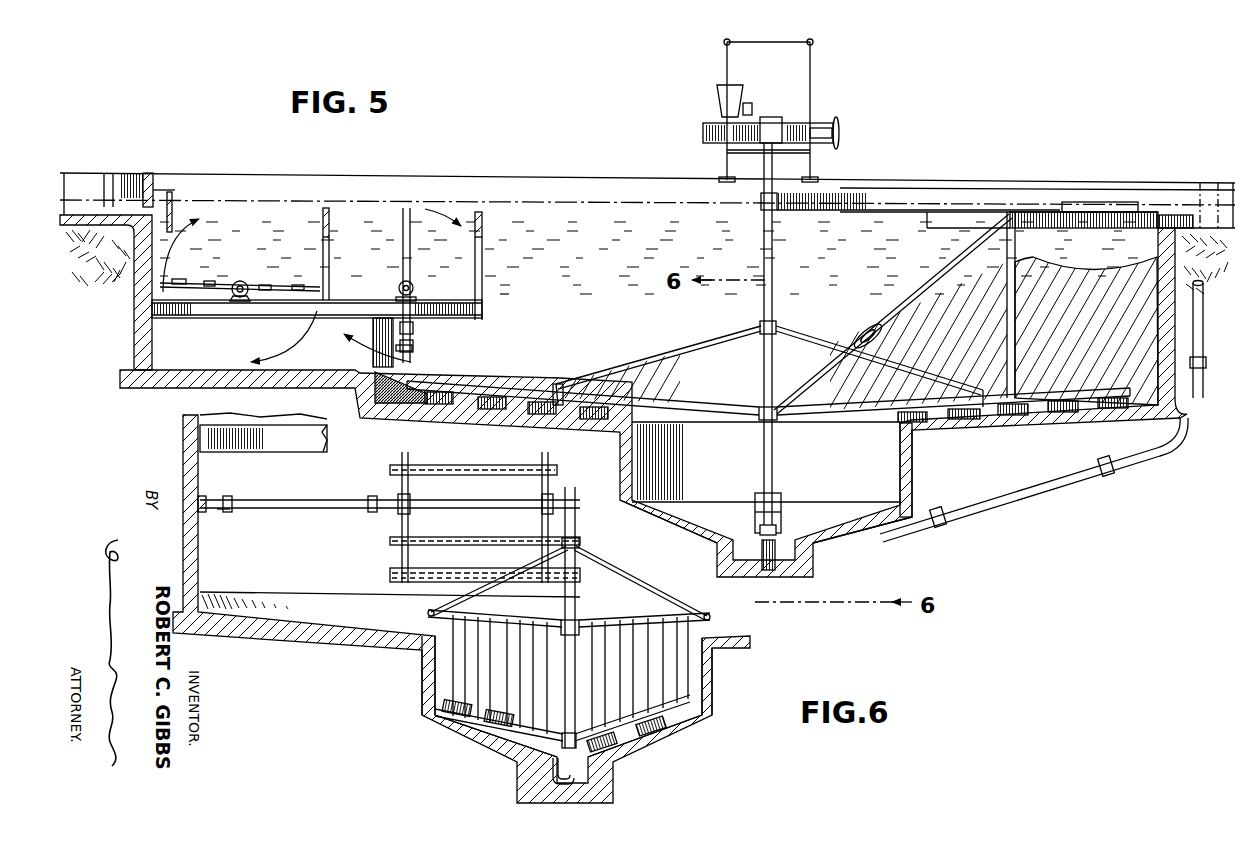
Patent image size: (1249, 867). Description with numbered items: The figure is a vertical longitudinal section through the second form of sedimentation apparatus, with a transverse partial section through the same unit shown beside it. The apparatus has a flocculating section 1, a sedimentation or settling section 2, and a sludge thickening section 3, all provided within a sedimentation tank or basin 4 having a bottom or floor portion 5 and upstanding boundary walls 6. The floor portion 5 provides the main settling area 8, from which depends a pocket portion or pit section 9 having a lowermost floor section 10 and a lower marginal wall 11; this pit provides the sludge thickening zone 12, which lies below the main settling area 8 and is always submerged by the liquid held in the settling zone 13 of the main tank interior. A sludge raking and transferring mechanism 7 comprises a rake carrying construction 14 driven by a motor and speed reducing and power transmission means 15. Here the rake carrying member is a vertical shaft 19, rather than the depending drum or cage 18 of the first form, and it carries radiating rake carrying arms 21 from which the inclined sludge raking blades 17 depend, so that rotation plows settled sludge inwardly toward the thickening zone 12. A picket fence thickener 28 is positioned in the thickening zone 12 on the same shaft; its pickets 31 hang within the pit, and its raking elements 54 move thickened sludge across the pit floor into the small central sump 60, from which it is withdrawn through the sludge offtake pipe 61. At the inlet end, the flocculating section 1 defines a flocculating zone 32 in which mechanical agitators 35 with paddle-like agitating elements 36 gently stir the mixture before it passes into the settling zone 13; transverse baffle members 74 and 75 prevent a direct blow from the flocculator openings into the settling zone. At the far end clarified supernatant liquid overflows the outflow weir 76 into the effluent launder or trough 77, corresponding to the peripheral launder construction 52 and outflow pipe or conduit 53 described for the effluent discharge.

In FIG. 5, the flocculating section 1 is at (239, 236).
In FIG. 6, the flocculating section 1 is at (282, 472).
In FIG. 5, the sedimentation or settling section 2 is at (893, 267).
In FIG. 5, the sludge thickening section 3 is at (856, 444).
In FIG. 6, the sludge thickening section 3 is at (582, 677).
In FIG. 5, the sedimentation tank or basin 4 is at (1086, 331).
In FIG. 5, the bottom or floor portion 5 is at (590, 428).
In FIG. 5, the upstanding boundary walls 6 is at (1168, 316).
In FIG. 5, the sludge raking and transferring mechanism 7 is at (813, 343).
In FIG. 5, the main settling area 8 is at (542, 416).
In FIG. 5, the pocket portion or pit section 9 is at (886, 472).
In FIG. 6, the pocket portion or pit section 9 is at (713, 711).
In FIG. 5, the lowermost floor section 10 is at (873, 513).
In FIG. 6, the lowermost floor section 10 is at (493, 758).
In FIG. 5, the lower marginal wall 11 is at (628, 466).
In FIG. 6, the lower marginal wall 11 is at (433, 665).
In FIG. 5, the sludge thickening zone 12 is at (766, 462).
In FIG. 6, the sludge thickening zone 12 is at (489, 662).
In FIG. 5, the sedimentation or settling zone 13 is at (655, 258).
In FIG. 5, the rake carrying construction 14 is at (776, 259).
In FIG. 5, the motor and speed reducing and power transmission means 15 is at (768, 125).
In FIG. 5, the sludge raking and conveying blades 17 is at (1022, 402).
In FIG. 5, the depending drum or cage 18 is at (597, 402).
In FIG. 5, the shaft 19 is at (763, 304).
In FIG. 5, the rake carrying arms 21 is at (503, 384).
In FIG. 6, the picket fence thickener 28 is at (630, 707).
In FIG. 6, the pickets 31 is at (673, 682).
In FIG. 6, the flocculating zone or space 32 is at (389, 490).
In FIG. 6, the mechanical agitators 35 is at (485, 517).
In FIG. 5, the mechanical agitating elements 36 is at (207, 282).
In FIG. 6, the mechanical agitating elements 36 is at (446, 541).
In FIG. 5, the peripheral launder construction 52 is at (1174, 215).
In FIG. 5, the outflow pipe or conduit 53 is at (1218, 200).
In FIG. 6, the raking elements 54 is at (663, 718).
In FIG. 5, the sump or thickened sludge receiving portion 60 is at (775, 557).
In FIG. 5, the sludge withdrawing pipe or conduit 61 is at (1073, 478).
In FIG. 5, the baffle member 74 is at (327, 208).
In FIG. 5, the baffle member 75 is at (481, 212).
In FIG. 5, the outflow weir 76 is at (1183, 222).
In FIG. 5, the effluent launder or trough 77 is at (1202, 197).